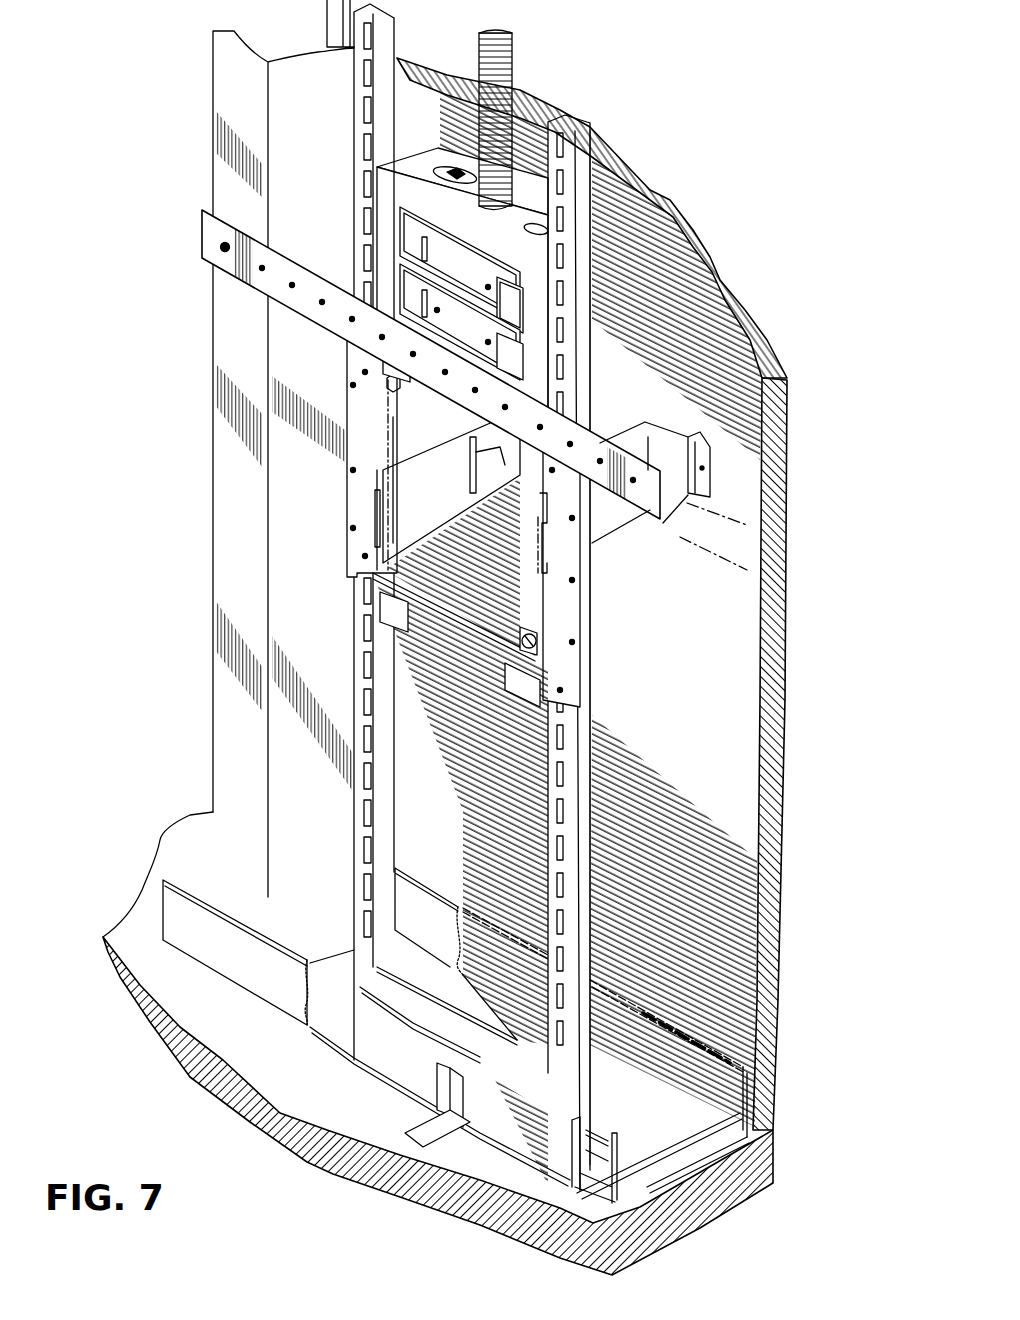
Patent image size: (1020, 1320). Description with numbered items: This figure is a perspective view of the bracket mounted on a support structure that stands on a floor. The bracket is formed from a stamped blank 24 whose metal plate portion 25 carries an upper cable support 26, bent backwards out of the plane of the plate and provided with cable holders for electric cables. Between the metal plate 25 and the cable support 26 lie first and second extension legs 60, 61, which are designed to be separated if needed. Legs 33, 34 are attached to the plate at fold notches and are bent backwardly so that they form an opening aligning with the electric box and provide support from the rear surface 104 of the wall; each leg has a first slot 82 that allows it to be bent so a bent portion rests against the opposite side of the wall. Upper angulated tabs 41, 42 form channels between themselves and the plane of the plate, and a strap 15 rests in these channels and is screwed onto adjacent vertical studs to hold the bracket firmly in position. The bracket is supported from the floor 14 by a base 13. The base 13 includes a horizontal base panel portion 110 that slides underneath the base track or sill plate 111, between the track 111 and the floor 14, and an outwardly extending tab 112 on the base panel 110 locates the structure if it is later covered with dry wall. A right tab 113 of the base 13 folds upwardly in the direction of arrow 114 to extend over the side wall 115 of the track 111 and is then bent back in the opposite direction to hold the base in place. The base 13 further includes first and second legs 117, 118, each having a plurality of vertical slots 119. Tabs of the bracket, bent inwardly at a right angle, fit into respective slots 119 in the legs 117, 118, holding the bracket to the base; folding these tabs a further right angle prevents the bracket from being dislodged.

The base 13 is at (584, 329).
The floor 14 is at (294, 1067).
The first strap 15 is at (300, 262).
The stamped blank 24 is at (347, 516).
The metal plate portion 25 is at (521, 616).
The upper cable support 26 is at (424, 165).
The leg 33 is at (642, 425).
The leg 34 is at (439, 498).
The upper angulated tab 41 is at (380, 358).
The upper angulated tab 42 is at (470, 452).
The first extension leg 60 is at (476, 282).
The second extension leg 61 is at (476, 336).
The first slot 82 is at (692, 455).
The rear surface 104 is at (699, 695).
The horizontal base panel portion 110 is at (603, 1235).
The base track or sill plate 111 is at (325, 972).
The outwardly extending tab 112 is at (430, 1125).
The right tab 113 is at (592, 1128).
The arrow 114 is at (615, 1151).
The side wall 115 is at (622, 1196).
The first leg 117 is at (593, 655).
The second leg 118 is at (431, 532).
The vertical slots 119 is at (355, 682).